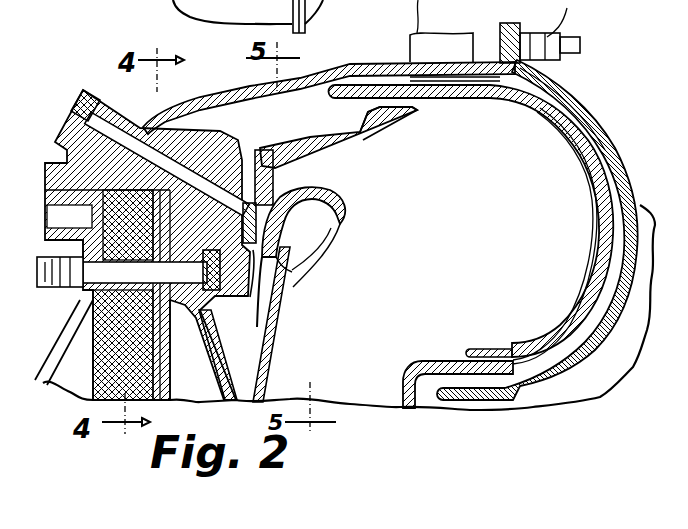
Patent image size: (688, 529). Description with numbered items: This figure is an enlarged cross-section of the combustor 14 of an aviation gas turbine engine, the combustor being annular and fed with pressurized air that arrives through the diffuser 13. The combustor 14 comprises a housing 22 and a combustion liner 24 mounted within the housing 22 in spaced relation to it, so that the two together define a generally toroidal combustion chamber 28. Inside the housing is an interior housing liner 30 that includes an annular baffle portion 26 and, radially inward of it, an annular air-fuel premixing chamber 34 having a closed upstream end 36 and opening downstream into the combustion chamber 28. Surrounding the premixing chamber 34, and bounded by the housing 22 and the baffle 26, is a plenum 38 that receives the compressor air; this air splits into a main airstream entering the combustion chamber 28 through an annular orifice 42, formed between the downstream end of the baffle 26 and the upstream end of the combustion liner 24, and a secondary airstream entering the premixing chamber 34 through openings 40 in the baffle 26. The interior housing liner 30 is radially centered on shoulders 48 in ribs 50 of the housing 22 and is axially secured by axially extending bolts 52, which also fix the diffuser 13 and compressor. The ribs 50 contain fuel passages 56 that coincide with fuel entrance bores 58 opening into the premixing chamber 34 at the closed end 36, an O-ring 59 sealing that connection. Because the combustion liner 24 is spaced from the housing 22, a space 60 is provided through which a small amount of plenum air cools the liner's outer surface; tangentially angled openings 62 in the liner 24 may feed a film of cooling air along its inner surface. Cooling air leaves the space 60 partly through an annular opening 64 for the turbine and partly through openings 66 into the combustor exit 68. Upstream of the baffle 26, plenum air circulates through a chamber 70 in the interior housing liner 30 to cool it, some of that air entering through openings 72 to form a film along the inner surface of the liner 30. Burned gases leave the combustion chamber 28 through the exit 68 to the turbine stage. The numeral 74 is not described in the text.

The diffuser 13 is at (107, 332).
The combustor 14 is at (611, 70).
The housing 22 is at (590, 122).
The combustion liner 24 is at (587, 150).
The annular baffle portion 26 is at (368, 146).
The combustion chamber 28 is at (489, 230).
The interior housing liner 30 is at (313, 247).
The air-fuel premixing chamber 34 is at (300, 175).
The closed upstream end 36 is at (255, 174).
The plenum 38 is at (266, 114).
The openings 40 is at (301, 160).
The annular orifice 42 is at (385, 100).
The shoulders 48 is at (245, 260).
The ribs 50 is at (165, 229).
The bolts 52 is at (128, 270).
The fuel passages 56 is at (90, 130).
The fuel entrance bores 58 is at (334, 218).
The O-ring 59 is at (328, 230).
The space 60 is at (614, 181).
The openings 62 is at (572, 112).
The annular opening 64 is at (500, 380).
The openings 66 is at (510, 364).
The combustor exit 68 is at (394, 398).
The chamber 70 is at (252, 356).
The openings 72 is at (287, 283).
The seal strip 74 is at (468, 352).